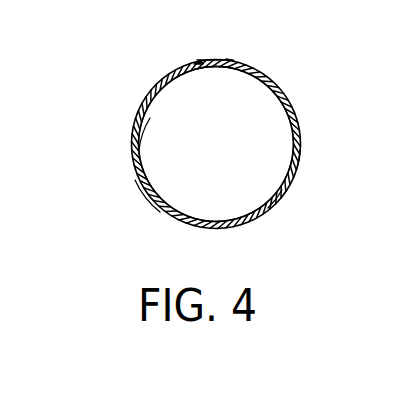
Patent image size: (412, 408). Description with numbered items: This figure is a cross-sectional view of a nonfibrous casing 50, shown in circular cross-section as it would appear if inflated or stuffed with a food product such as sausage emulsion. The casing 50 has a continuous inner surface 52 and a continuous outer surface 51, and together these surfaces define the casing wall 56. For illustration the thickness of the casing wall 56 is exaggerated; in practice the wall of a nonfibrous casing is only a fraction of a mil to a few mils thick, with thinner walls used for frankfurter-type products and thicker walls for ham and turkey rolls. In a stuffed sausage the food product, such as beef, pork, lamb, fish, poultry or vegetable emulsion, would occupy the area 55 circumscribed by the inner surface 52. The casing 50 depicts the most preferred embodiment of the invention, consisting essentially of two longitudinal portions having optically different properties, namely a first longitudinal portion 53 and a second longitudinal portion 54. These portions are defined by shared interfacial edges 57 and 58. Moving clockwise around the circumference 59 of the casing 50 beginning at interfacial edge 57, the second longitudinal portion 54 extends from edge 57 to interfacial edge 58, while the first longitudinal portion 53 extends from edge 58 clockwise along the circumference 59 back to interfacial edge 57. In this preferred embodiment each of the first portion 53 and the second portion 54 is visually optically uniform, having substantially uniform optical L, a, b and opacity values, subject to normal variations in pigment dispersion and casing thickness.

The nonfibrous casing 50 is at (133, 112).
The outer surface 51 is at (147, 188).
The inner surface 52 is at (139, 148).
The first longitudinal portion 53 is at (296, 117).
The second longitudinal portion 54 is at (215, 68).
The area 55 is at (250, 192).
The casing wall 56 is at (280, 197).
The interfacial edge 57 is at (197, 59).
The interfacial edge 58 is at (232, 60).
The circumference 59 is at (300, 160).